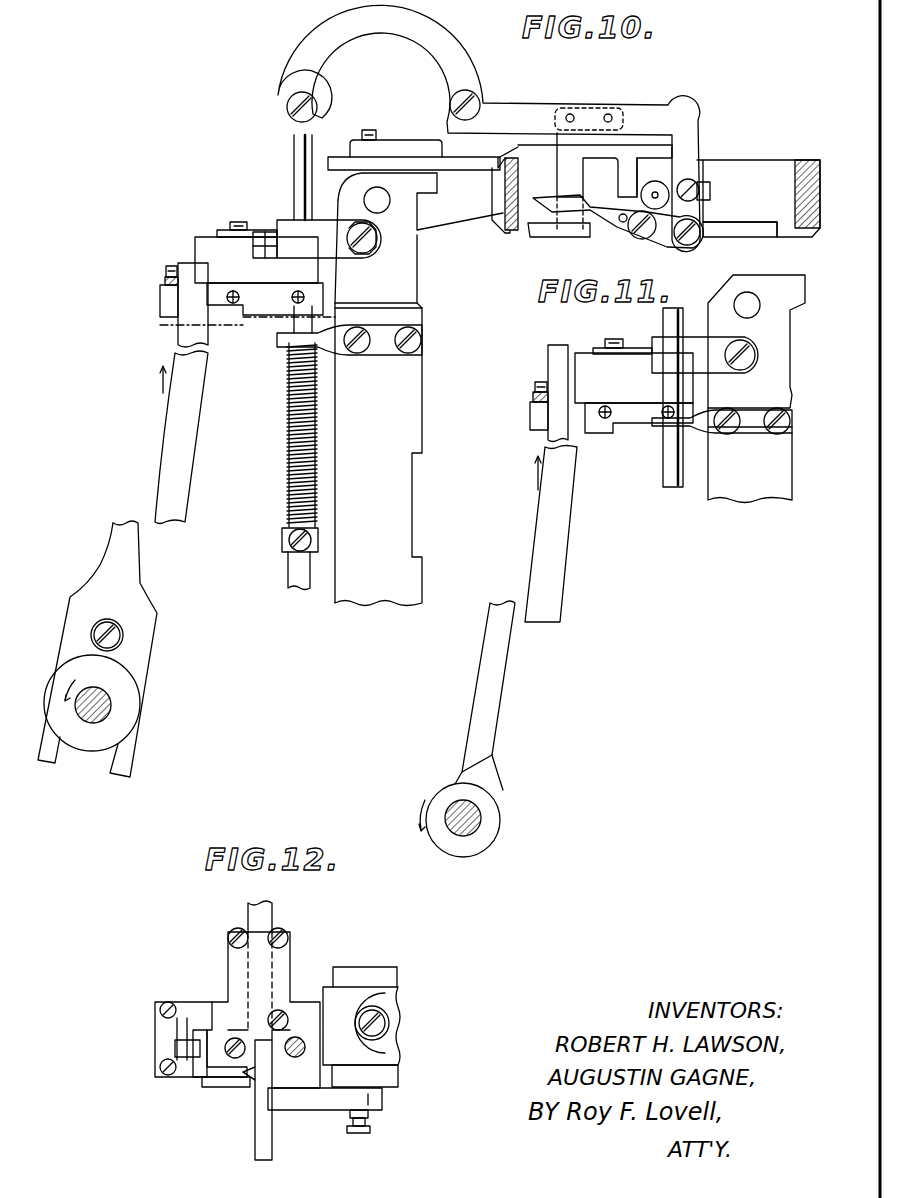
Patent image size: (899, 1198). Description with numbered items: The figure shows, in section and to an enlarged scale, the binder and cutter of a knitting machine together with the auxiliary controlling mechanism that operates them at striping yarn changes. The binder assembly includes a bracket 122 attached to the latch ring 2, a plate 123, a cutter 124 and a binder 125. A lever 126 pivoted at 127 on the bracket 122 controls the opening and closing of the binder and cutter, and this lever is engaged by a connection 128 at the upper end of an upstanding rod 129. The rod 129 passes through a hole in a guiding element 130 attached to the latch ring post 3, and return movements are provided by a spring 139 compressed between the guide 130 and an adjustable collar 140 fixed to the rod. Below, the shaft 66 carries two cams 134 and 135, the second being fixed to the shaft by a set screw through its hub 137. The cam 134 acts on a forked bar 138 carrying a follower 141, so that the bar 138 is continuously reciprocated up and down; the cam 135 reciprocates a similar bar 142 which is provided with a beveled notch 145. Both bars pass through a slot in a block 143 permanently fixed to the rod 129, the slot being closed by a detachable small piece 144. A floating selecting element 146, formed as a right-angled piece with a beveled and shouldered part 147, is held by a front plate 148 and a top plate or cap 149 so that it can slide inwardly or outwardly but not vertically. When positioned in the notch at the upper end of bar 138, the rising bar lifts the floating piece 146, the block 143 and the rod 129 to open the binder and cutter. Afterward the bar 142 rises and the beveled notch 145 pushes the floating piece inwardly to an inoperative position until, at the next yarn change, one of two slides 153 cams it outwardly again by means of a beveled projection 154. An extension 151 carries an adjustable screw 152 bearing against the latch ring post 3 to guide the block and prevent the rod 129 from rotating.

In FIG. 10, the latch ring 2 is at (748, 167).
In FIG. 10, the latch ring post 3 is at (406, 372).
In FIG. 11, the latch ring post 3 is at (756, 389).
In FIG. 12, the latch ring post 3 is at (363, 972).
In FIG. 10, the shaft 66 is at (104, 720).
In FIG. 10, the bracket 122 is at (453, 156).
In FIG. 12, the bracket 122 is at (383, 1000).
In FIG. 10, the plate 123 is at (757, 232).
In FIG. 10, the cutter 124 is at (578, 211).
In FIG. 10, the binder 125 is at (592, 187).
In FIG. 10, the lever 126 is at (489, 128).
In FIG. 10, the pivot 127 is at (470, 102).
In FIG. 10, the connection 128 is at (306, 108).
In FIG. 10, the upstanding rod 129 is at (300, 170).
In FIG. 11, the upstanding rod 129 is at (675, 487).
In FIG. 12, the upstanding rod 129 is at (298, 1038).
In FIG. 10, the guiding element 130 is at (286, 341).
In FIG. 11, the guiding element 130 is at (722, 421).
In FIG. 10, the cam 134 is at (126, 690).
In FIG. 10, the cam 135 is at (485, 776).
In FIG. 10, the hub 137 is at (494, 830).
In FIG. 10, the bar 138 is at (134, 583).
In FIG. 10, the spring 139 is at (290, 437).
In FIG. 10, the adjustable collar 140 is at (283, 542).
In FIG. 10, the follower 141 is at (124, 612).
In FIG. 10, the bar 142 is at (500, 674).
In FIG. 10, the block 143 is at (165, 304).
In FIG. 11, the block 143 is at (539, 406).
In FIG. 12, the block 143 is at (190, 1005).
In FIG. 12, the small piece 144 is at (162, 1042).
In FIG. 10, the beveled notch 145 is at (181, 393).
In FIG. 11, the beveled notch 145 is at (573, 395).
In FIG. 10, the floating selecting element 146 is at (247, 273).
In FIG. 11, the floating selecting element 146 is at (634, 386).
In FIG. 12, the floating selecting element 146 is at (200, 1077).
In FIG. 12, the beveled and shouldered part 147 is at (253, 1087).
In FIG. 12, the front plate 148 is at (217, 1087).
In FIG. 12, the cap 149 is at (236, 975).
In FIG. 10, the extension 151 is at (329, 239).
In FIG. 11, the extension 151 is at (705, 355).
In FIG. 12, the extension 151 is at (293, 1103).
In FIG. 10, the adjustable screw 152 is at (366, 245).
In FIG. 11, the adjustable screw 152 is at (741, 366).
In FIG. 12, the adjustable screw 152 is at (363, 1127).
In FIG. 12, the slide 153 is at (265, 913).
In FIG. 10, the beveled projection 154 is at (257, 241).
In FIG. 12, the beveled projection 154 is at (251, 1072).